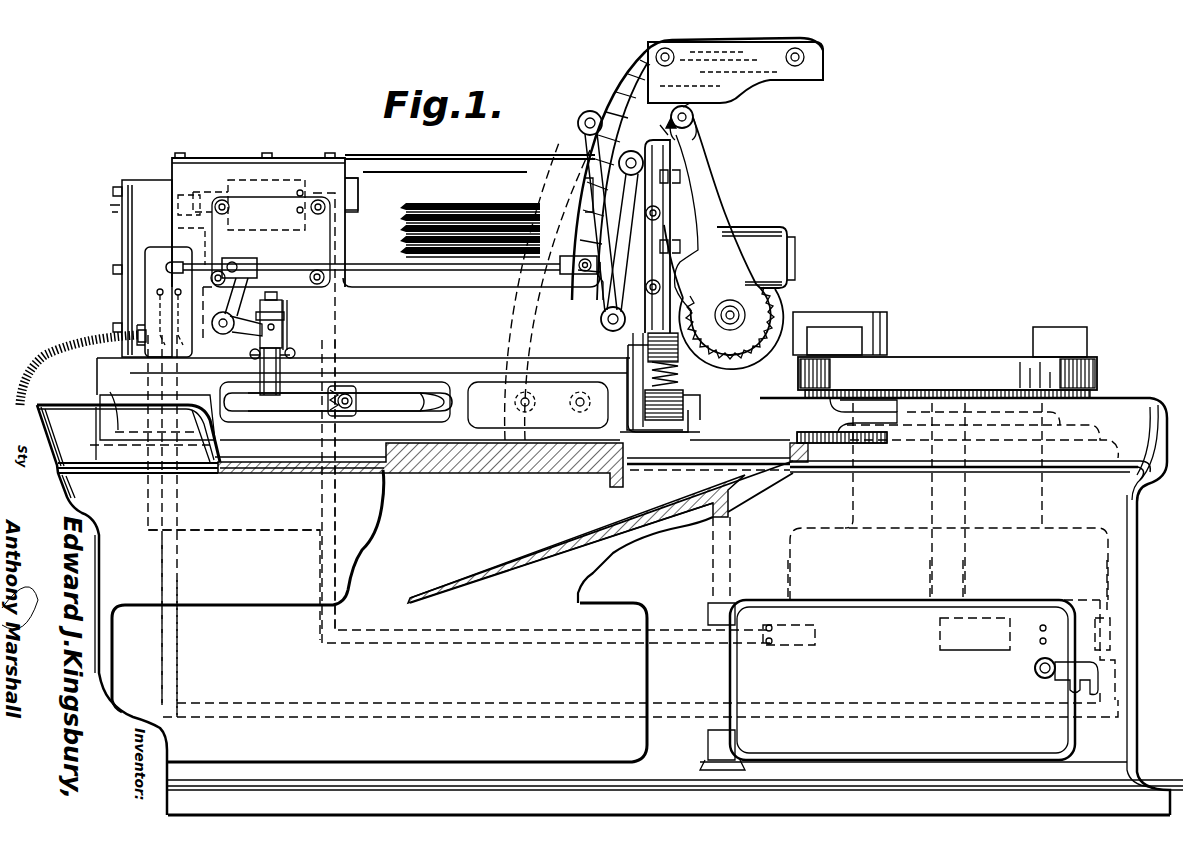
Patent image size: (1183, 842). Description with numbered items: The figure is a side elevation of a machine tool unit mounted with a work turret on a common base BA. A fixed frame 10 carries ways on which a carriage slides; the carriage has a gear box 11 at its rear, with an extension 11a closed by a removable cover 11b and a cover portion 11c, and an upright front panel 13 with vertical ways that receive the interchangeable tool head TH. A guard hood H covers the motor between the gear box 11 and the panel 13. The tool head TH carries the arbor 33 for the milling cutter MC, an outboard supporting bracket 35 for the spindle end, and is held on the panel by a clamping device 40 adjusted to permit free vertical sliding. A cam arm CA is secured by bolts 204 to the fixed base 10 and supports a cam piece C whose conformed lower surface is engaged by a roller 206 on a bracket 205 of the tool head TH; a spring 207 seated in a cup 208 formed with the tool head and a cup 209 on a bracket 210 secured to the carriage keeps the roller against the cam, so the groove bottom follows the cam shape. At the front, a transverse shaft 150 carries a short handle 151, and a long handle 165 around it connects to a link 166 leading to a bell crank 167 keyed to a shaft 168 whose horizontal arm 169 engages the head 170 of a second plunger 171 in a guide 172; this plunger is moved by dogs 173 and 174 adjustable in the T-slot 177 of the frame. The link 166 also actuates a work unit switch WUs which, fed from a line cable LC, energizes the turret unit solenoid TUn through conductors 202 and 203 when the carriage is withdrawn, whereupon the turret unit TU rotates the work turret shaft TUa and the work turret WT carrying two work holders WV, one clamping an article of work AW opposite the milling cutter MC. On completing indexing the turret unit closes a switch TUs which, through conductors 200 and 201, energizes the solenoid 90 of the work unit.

The fixed frame 10 is at (420, 382).
The gear box 11 is at (228, 175).
The extension of the gear box 11a is at (148, 195).
The removable cover 11b is at (118, 214).
The casing cover 11c is at (210, 160).
The upright front panel 13 is at (606, 211).
The arbor 33 is at (733, 330).
The outboard supporting bracket 35 is at (738, 262).
The clamping device 40 is at (660, 214).
The solenoid 90 is at (270, 192).
The transverse shaft 150 is at (600, 318).
The short handle 151 is at (600, 278).
The long handle 165 is at (605, 222).
The link 166 is at (375, 272).
The bell crank 167 is at (260, 300).
The shaft 168 is at (202, 254).
The horizontal arm 169 is at (255, 334).
The head 170 is at (278, 324).
The second plunger 171 is at (282, 311).
The guide 172 is at (310, 365).
The dog 173 is at (338, 410).
The dog 174 is at (357, 407).
The T-slot 177 is at (448, 400).
The conductor 200 is at (222, 542).
The conductor 201 is at (352, 505).
The conductor 202 is at (178, 578).
The conductor 203 is at (163, 562).
The bolts 204 is at (550, 412).
The bracket 205 is at (702, 126).
The roller 206 is at (700, 112).
The spring 207 is at (683, 392).
The cup 208 is at (670, 358).
The cup 209 is at (686, 410).
The bracket 210 is at (665, 425).
The guard hood H is at (460, 176).
The cam arm CA is at (606, 90).
The cam piece C is at (805, 80).
The tool head TH is at (690, 156).
The milling cutter MC is at (782, 300).
The article of work AW is at (835, 320).
The work holder WV is at (845, 342).
The work turret WT is at (978, 368).
The turret unit TU is at (1105, 505).
The work turret shaft TUa is at (955, 555).
The switch TUs is at (800, 632).
The turret unit solenoid TUn is at (958, 655).
The common base BA is at (1128, 648).
The line cable LC is at (70, 352).
The work unit switch WUs is at (157, 272).